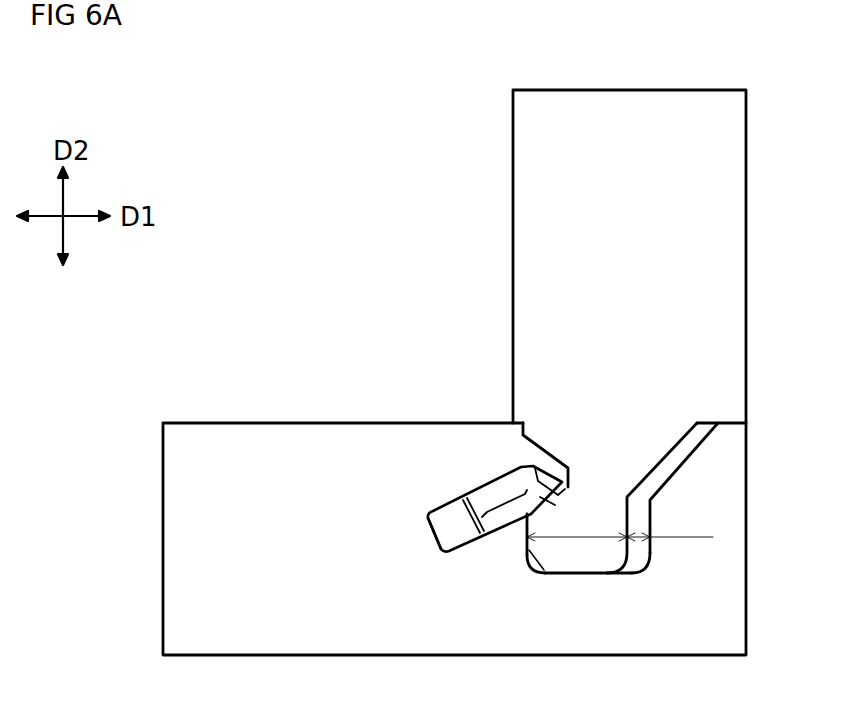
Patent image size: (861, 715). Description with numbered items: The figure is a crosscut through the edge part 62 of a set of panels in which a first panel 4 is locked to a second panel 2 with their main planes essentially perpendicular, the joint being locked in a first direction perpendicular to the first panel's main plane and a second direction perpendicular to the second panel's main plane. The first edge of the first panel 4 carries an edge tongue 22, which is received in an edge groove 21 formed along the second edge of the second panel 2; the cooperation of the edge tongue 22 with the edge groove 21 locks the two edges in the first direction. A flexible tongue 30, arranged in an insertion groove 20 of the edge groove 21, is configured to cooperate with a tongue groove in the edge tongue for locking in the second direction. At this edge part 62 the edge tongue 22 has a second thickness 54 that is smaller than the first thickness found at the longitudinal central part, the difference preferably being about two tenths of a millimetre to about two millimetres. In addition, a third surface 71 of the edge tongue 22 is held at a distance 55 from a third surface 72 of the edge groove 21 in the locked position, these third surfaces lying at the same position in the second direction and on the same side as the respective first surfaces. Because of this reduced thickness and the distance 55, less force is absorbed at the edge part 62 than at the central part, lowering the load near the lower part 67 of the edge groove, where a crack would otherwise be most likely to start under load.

The second panel 2 is at (216, 466).
The first panel 4 is at (710, 296).
The edge part 62 is at (384, 294).
The flexible tongue 30 is at (490, 487).
The edge tongue 22 is at (598, 472).
The insertion groove 20 is at (437, 522).
The edge groove 21 is at (527, 572).
The third surface of the edge tongue 71 is at (620, 556).
The lower part of the edge groove 67 is at (647, 568).
The third surface of the edge groove 72 is at (652, 545).
The second thickness 54 is at (577, 522).
The distance 55 is at (670, 522).